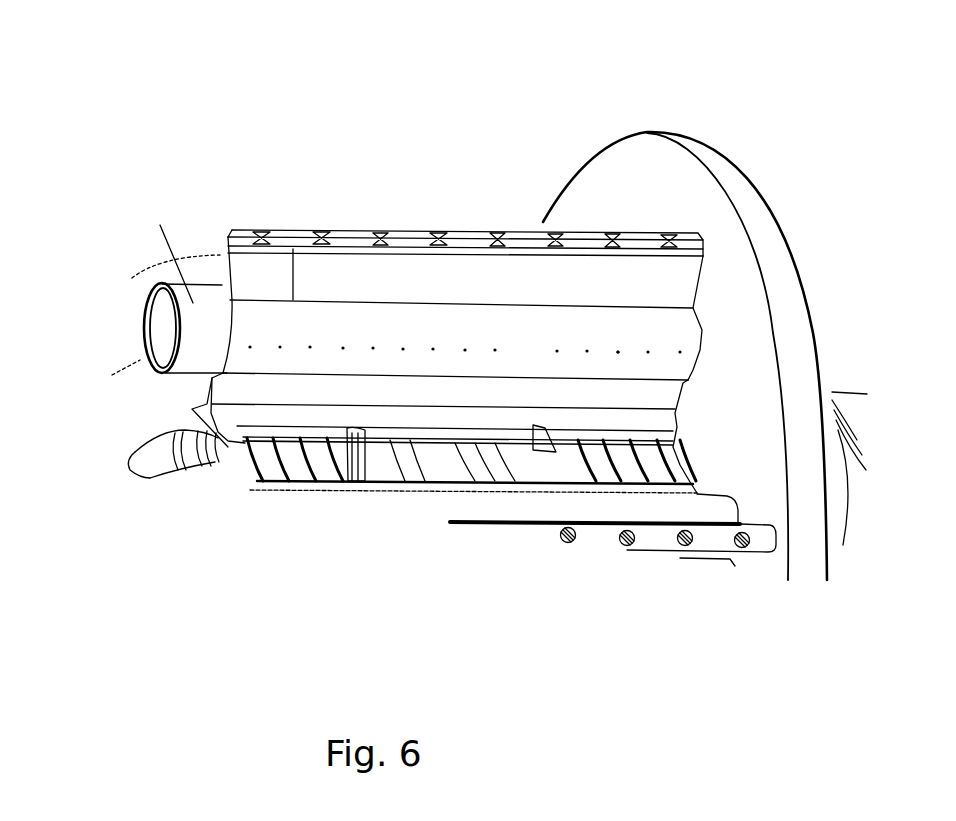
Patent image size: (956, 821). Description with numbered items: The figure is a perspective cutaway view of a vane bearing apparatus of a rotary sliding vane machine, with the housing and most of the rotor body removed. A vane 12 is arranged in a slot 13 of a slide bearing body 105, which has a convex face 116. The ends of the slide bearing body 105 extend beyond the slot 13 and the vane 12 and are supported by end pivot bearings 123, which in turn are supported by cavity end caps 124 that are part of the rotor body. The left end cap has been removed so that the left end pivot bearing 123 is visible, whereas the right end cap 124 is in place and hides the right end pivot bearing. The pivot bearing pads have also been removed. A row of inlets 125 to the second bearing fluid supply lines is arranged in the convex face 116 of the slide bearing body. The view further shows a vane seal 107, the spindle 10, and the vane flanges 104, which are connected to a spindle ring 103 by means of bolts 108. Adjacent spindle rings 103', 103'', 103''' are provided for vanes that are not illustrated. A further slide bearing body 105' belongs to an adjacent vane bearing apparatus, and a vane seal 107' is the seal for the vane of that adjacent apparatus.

The spindle 10 is at (145, 457).
The vane 12 is at (402, 270).
The slot 13 is at (290, 243).
The spindle ring 103 is at (471, 550).
The adjacent spindle ring 103' is at (229, 519).
The adjacent spindle ring 103'' is at (202, 511).
The adjacent spindle ring 103''' is at (158, 506).
The vane flanges 104 is at (318, 460).
The slide bearing body 105 is at (461, 212).
The slide bearing body of adjacent vane bearing apparatus 105' is at (674, 594).
The vane seal 107 is at (461, 156).
The vane seal of adjacent vane 107' is at (613, 613).
The bolts 108 is at (387, 481).
The convex face 116 is at (603, 332).
The end pivot bearings 123 is at (220, 290).
The cavity end caps 124 is at (647, 163).
The inlets 125 is at (527, 350).